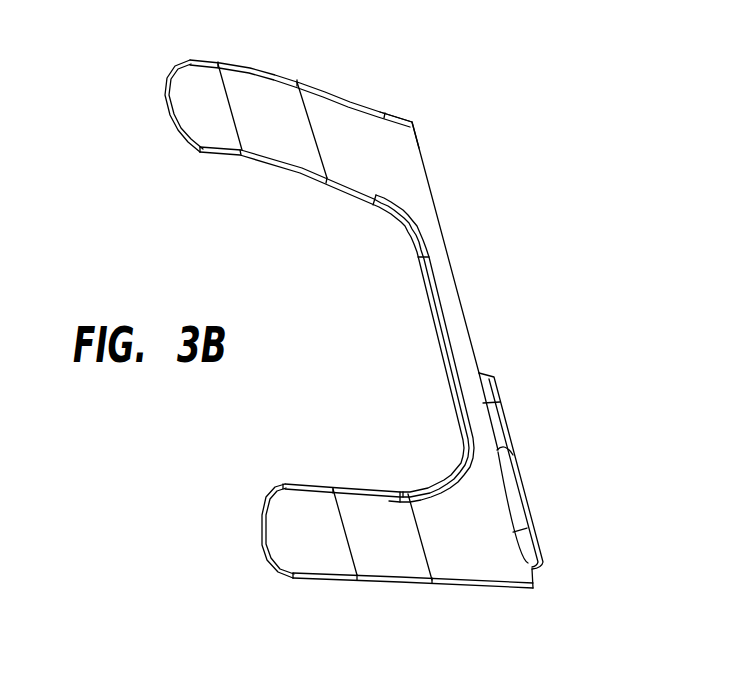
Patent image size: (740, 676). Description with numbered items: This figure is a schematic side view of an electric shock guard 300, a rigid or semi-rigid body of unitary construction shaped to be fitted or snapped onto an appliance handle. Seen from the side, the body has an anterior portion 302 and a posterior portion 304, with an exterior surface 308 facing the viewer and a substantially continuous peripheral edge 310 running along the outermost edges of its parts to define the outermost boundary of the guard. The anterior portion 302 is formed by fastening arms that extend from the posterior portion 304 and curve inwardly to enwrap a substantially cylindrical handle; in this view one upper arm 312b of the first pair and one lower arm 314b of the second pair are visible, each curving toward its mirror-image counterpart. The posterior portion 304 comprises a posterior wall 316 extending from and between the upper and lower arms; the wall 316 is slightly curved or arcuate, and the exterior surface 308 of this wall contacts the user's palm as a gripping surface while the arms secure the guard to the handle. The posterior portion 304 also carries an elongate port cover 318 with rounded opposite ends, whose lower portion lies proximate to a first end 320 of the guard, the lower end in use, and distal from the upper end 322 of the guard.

The electric shock guard 300 is at (550, 62).
The anterior portion 302 is at (135, 83).
The posterior portion 304 is at (470, 229).
The exterior surface 308 is at (478, 537).
The peripheral edge 310 is at (441, 344).
The first pair arm 312b is at (200, 110).
The second pair arm 314b is at (290, 532).
The posterior wall 316 is at (450, 298).
The port cover 318 is at (512, 432).
The first end 320 is at (404, 598).
The upper end 322 is at (407, 100).